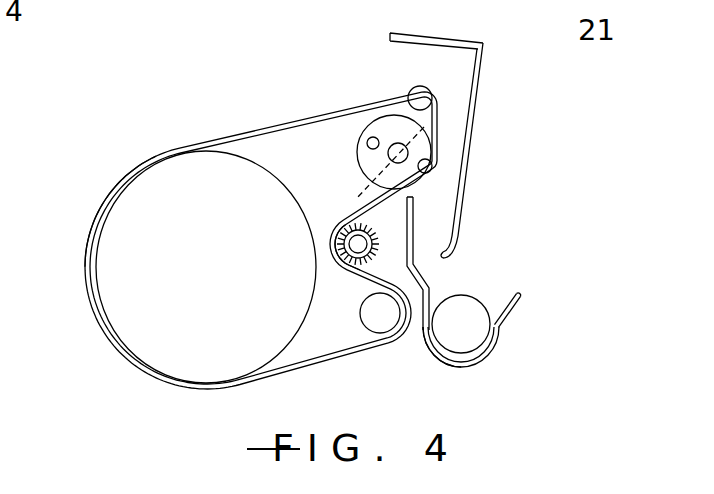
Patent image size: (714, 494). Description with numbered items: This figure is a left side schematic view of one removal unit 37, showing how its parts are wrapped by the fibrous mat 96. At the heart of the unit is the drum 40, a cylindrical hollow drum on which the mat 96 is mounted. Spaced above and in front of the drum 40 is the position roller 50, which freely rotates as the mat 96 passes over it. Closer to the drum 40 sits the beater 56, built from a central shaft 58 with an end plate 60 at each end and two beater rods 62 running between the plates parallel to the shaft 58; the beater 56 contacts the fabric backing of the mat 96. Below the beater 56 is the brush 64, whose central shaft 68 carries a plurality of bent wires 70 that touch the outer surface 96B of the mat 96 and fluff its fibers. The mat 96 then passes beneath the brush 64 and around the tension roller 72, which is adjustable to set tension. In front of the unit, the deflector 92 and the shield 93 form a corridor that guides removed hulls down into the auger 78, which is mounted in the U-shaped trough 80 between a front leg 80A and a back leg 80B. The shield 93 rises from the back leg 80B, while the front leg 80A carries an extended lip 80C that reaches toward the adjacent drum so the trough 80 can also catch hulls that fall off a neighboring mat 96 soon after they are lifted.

The removal unit 37 is at (248, 102).
The drum 40 is at (127, 290).
The position roller 50 is at (433, 85).
The beater 56 is at (391, 116).
The central shaft 58 is at (403, 143).
The end plate 60 is at (402, 120).
The beater rods 62 is at (366, 145).
The brush 64 is at (348, 270).
The central shaft 68 is at (338, 247).
The bent wires 70 is at (357, 240).
The tension roller 72 is at (378, 318).
The auger 78 is at (460, 305).
The trough 80 is at (488, 352).
The front leg 80A is at (500, 327).
The back leg 80B is at (418, 333).
The extended lip 80C is at (506, 293).
The deflector 92 is at (480, 111).
The shield 93 is at (415, 212).
The fibrous mat 96 is at (228, 134).
The outer surface 96B is at (147, 157).